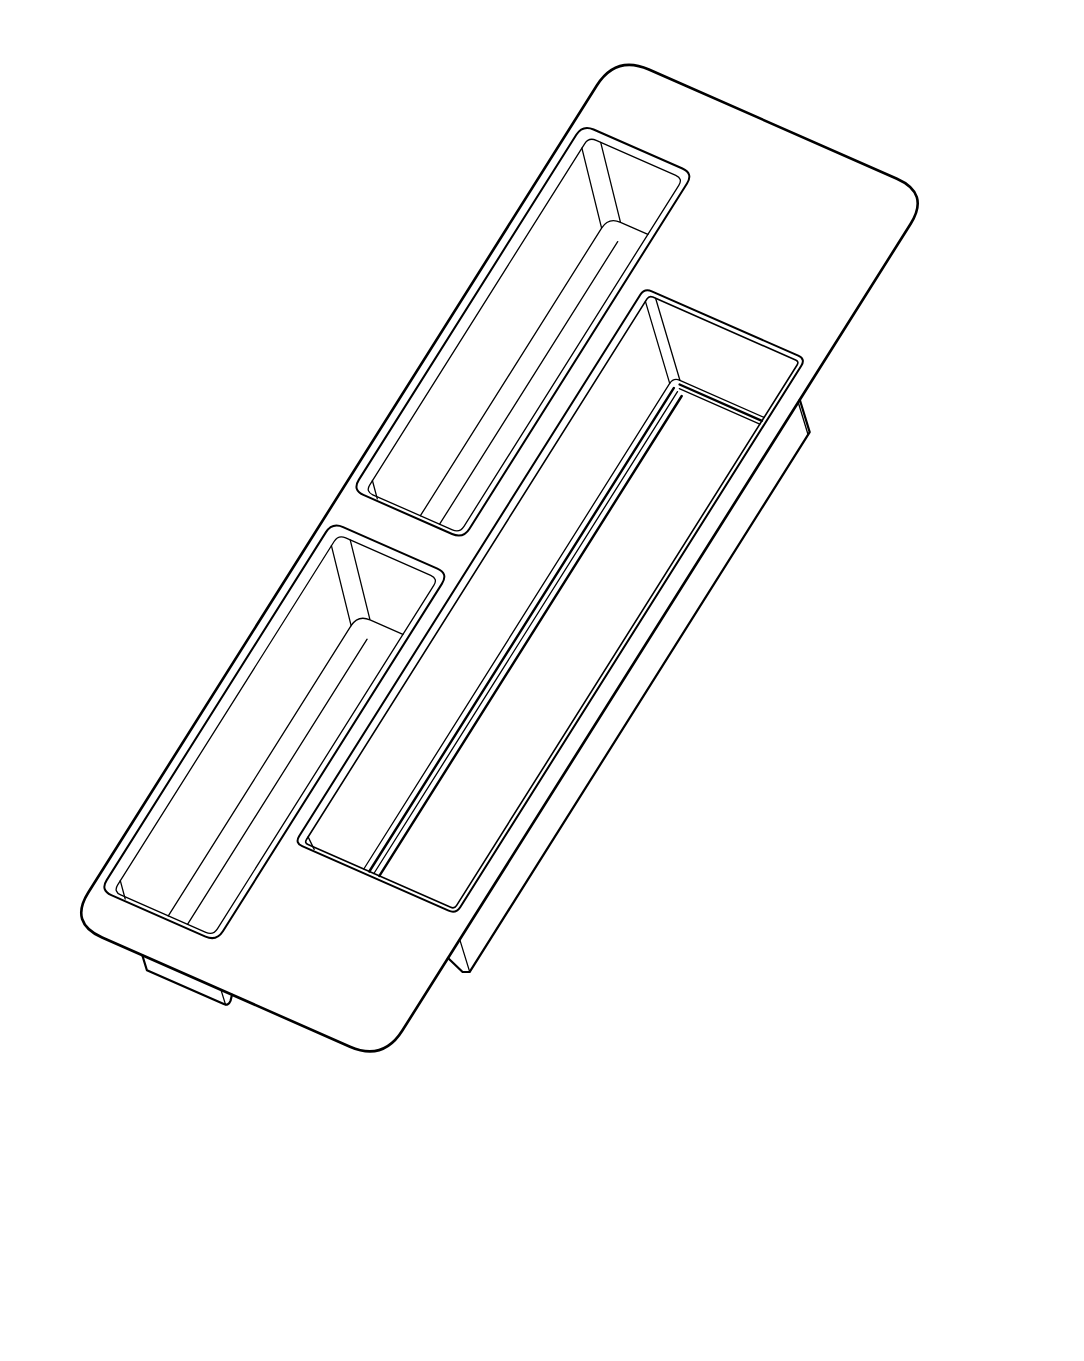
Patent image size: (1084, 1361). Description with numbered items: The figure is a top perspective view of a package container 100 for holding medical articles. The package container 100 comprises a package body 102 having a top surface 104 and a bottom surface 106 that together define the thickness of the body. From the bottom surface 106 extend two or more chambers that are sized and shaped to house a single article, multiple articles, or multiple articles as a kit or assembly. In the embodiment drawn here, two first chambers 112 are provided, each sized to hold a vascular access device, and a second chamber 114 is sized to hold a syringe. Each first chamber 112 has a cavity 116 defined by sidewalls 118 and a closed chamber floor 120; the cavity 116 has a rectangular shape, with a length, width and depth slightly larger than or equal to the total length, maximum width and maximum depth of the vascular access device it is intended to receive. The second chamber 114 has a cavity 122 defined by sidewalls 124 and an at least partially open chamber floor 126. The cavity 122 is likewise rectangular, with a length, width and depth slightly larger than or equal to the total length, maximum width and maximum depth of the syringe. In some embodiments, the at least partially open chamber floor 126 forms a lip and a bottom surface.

The package container 100 is at (234, 101).
The package body 102 is at (337, 503).
The top surface 104 is at (632, 80).
The bottom surface 106 is at (911, 250).
The first chamber 112 is at (558, 297).
The second chamber 114 is at (672, 574).
The cavity 116 is at (207, 814).
The sidewalls 118 is at (392, 583).
The closed chamber floor 120 is at (280, 799).
The cavity 122 is at (634, 418).
The sidewalls 124 is at (358, 828).
The at least partially open chamber floor 126 is at (528, 632).